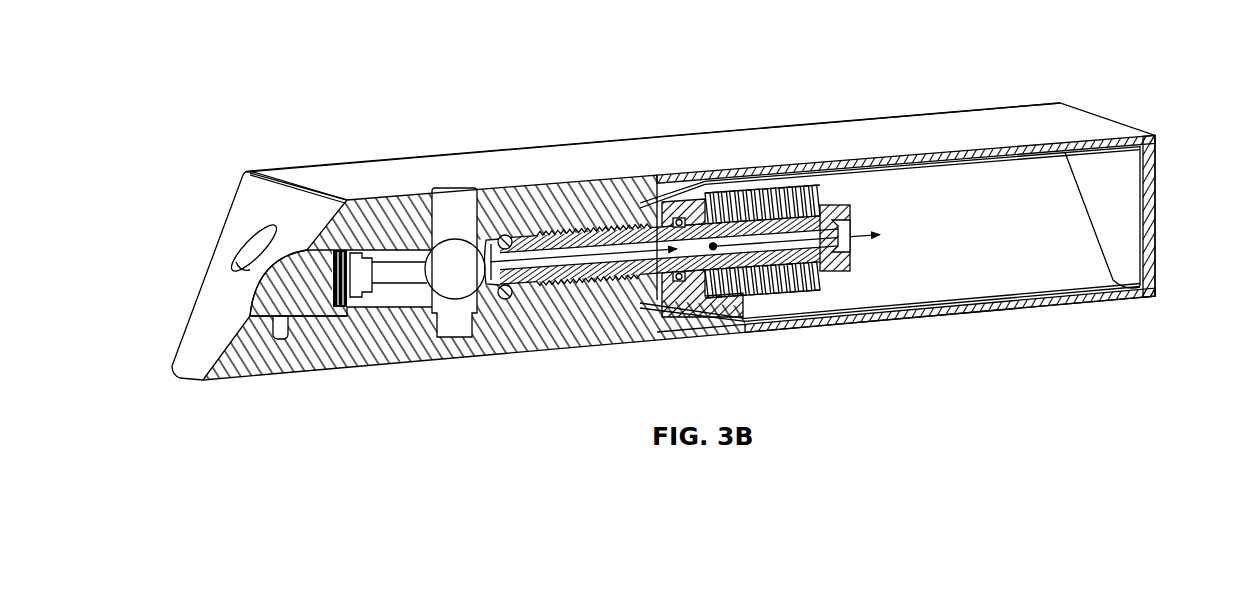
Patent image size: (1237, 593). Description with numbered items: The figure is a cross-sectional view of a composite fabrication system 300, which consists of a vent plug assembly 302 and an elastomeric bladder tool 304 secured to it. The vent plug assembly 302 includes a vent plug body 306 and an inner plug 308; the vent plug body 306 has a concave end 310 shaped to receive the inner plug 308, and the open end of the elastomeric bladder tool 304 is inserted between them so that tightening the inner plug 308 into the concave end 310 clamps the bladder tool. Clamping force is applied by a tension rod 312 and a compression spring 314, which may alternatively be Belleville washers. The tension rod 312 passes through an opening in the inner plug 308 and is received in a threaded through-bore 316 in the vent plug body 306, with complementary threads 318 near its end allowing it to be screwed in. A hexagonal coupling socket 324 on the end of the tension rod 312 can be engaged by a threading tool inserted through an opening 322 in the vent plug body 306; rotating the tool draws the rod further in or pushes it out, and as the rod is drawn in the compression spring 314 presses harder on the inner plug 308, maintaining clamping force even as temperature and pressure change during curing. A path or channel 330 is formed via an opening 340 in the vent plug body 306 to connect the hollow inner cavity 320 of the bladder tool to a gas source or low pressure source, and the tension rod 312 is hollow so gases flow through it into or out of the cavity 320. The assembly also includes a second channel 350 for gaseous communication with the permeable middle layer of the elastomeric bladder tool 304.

The composite fabrication system 300 is at (1043, 42).
The vent plug assembly 302 is at (203, 201).
The elastomeric bladder tool 304 is at (1122, 96).
The vent plug body 306 is at (557, 158).
The inner plug 308 is at (718, 310).
The concave end 310 is at (655, 188).
The tension rod 312 is at (830, 263).
The compression spring 314 is at (777, 190).
The threaded through-bore 316 is at (582, 232).
The complementary threads 318 is at (563, 287).
The hollow inner cavity 320 is at (1035, 231).
The opening 322 is at (260, 300).
The hexagonal coupling socket 324 is at (490, 270).
The path or channel 330 is at (449, 261).
The opening 340 is at (440, 185).
The second channel 350 is at (228, 270).